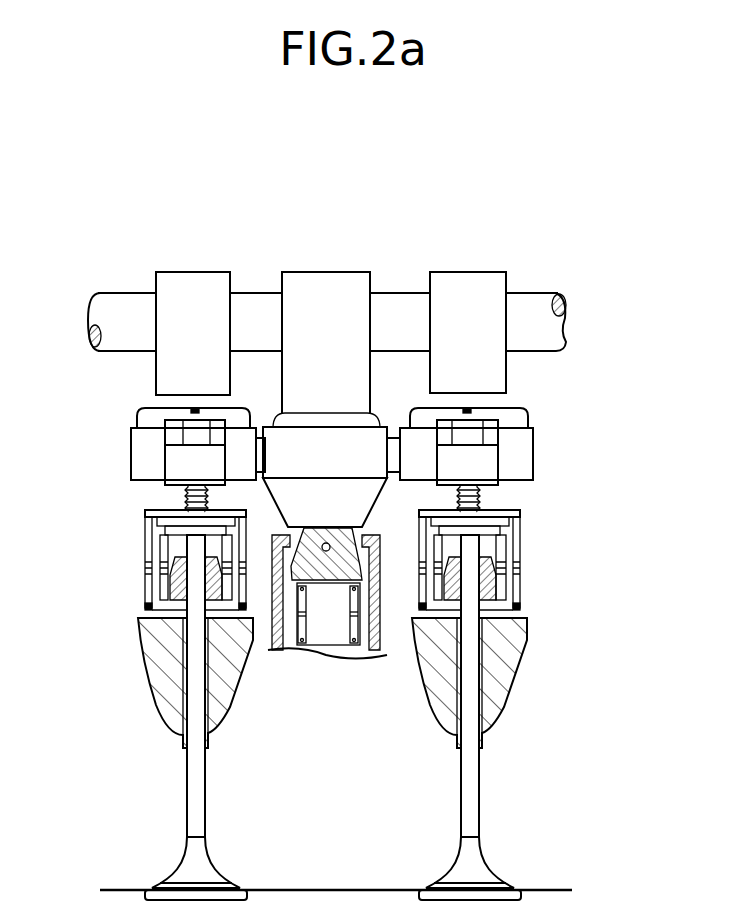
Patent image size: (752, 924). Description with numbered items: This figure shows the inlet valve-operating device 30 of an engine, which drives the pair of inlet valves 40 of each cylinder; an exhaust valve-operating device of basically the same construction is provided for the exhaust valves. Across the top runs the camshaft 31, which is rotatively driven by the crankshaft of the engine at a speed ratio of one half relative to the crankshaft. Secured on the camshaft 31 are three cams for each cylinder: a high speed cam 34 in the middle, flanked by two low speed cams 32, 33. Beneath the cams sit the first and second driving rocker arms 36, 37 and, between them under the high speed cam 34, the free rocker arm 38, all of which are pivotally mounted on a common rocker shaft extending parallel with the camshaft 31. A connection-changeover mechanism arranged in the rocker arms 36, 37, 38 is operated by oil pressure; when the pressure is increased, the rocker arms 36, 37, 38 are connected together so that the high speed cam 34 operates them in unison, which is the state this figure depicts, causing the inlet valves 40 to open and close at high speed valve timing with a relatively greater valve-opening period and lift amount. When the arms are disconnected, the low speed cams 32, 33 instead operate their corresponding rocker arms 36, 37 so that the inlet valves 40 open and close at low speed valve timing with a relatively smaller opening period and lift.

The inlet valve-operating device 30 is at (556, 280).
The camshaft 31 is at (537, 333).
The low speed cam 32 is at (194, 283).
The low speed cam 33 is at (466, 283).
The high speed cam 34 is at (329, 283).
The first driving rocker arm 36 is at (143, 457).
The second driving rocker arm 37 is at (518, 445).
The free rocker arm 38 is at (377, 462).
The inlet valves 40 is at (212, 877).